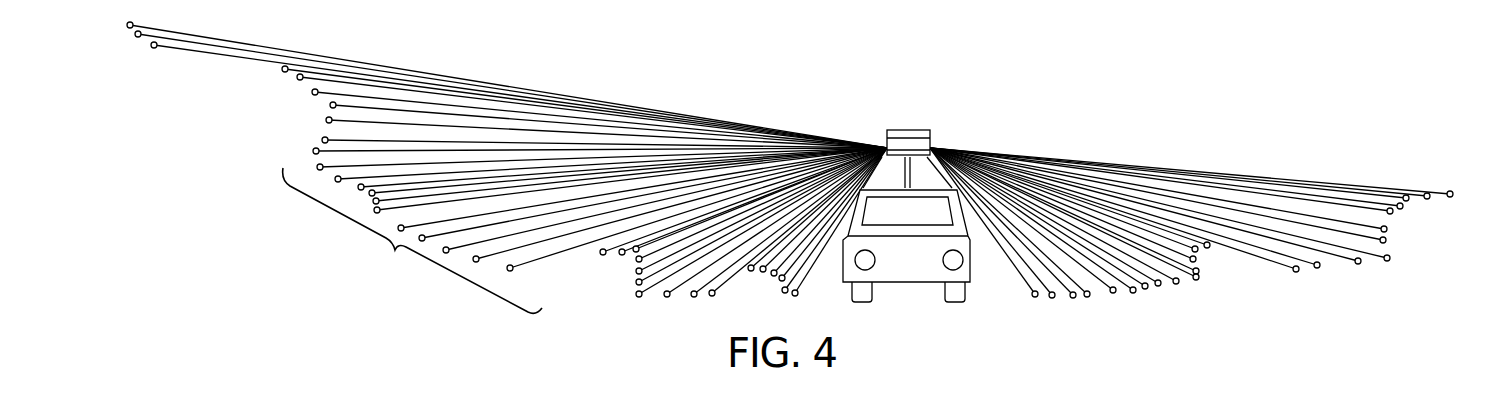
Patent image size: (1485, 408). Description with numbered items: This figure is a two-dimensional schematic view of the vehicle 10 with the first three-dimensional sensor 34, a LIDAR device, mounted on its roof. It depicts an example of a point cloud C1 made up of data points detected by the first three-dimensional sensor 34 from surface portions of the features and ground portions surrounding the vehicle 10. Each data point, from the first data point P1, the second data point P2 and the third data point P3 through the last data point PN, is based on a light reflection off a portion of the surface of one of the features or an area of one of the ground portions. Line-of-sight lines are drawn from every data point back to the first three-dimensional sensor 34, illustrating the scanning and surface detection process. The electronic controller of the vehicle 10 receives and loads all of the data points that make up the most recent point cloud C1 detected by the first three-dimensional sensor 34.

The vehicle 10 is at (908, 263).
The first 3D sensor 34 is at (902, 143).
The data point P1 is at (127, 27).
The data point P2 is at (137, 37).
The data point P3 is at (151, 47).
The data point PN is at (1451, 197).
The point cloud C1 is at (412, 240).